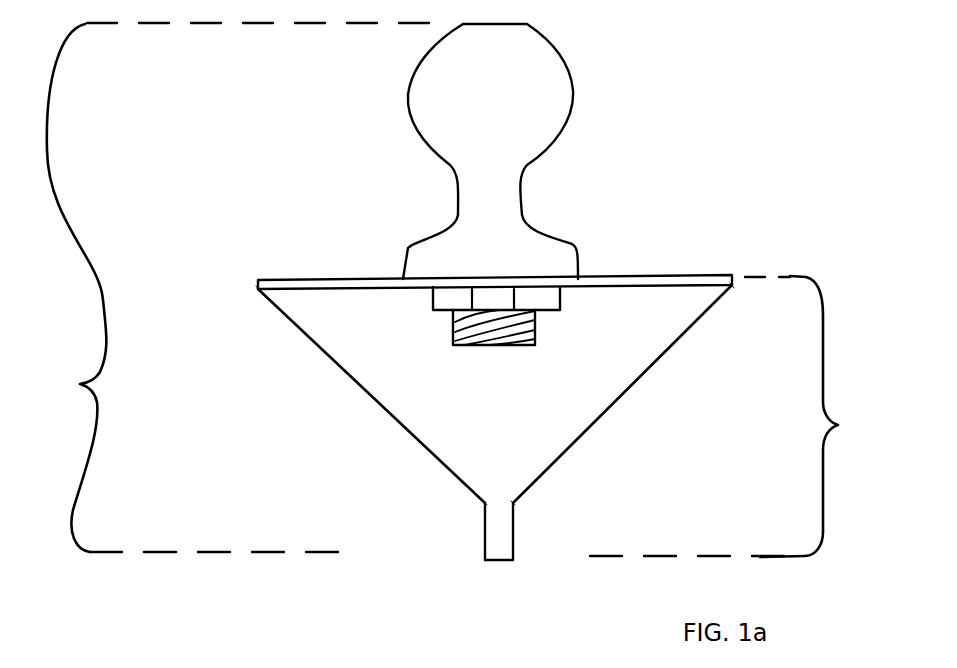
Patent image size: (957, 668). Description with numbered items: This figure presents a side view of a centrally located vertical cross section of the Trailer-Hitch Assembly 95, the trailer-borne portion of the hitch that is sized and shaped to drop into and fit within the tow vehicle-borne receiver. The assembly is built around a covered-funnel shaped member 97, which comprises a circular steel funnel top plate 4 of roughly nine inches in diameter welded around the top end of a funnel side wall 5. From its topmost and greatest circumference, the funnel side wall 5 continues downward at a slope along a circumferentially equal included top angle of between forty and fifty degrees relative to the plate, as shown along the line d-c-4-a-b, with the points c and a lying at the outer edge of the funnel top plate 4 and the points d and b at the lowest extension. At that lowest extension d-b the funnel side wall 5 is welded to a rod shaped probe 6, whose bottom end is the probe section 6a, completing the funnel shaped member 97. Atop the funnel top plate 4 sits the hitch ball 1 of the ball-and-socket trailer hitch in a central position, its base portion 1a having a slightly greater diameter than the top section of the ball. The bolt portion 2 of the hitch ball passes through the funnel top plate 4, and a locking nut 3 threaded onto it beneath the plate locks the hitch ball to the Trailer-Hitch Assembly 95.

The hitch ball 1 is at (475, 100).
The base portion of the hitch ball 1a is at (406, 246).
The bolt portion of the hitch ball 2 is at (488, 348).
The locking nut 3 is at (554, 313).
The funnel top plate 4 is at (624, 272).
The funnel side wall 5 is at (602, 425).
The rod shaped probe 6 is at (517, 541).
The probe section 6a is at (496, 565).
The point a is at (738, 287).
The point b is at (517, 511).
The point c is at (256, 288).
The point d is at (481, 507).
The Trailer-Hitch Assembly 95 is at (74, 288).
The covered-funnel shaped member 97 is at (828, 416).